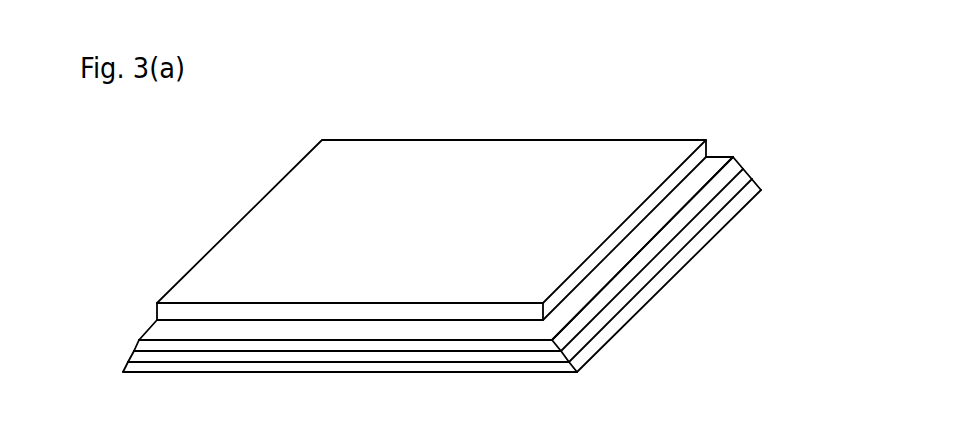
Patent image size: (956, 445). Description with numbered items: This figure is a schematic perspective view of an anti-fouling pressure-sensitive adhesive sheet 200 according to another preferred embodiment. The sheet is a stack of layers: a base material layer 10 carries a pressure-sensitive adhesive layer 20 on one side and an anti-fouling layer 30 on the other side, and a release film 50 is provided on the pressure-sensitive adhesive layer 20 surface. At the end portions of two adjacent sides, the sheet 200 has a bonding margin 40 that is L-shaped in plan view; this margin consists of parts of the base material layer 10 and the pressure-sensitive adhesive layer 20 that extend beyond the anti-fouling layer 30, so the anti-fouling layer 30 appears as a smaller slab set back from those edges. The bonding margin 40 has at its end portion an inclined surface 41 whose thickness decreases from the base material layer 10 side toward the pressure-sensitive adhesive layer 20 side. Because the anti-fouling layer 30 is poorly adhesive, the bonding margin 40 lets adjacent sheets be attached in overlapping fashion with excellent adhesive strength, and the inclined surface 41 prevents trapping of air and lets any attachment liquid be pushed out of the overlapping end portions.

The anti-fouling pressure-sensitive adhesive sheet 200 is at (514, 65).
The anti-fouling layer 30 is at (156, 312).
The base material layer 10 is at (137, 341).
The pressure-sensitive adhesive layer 20 is at (131, 356).
The release film 50 is at (125, 369).
The bonding margin 40 is at (718, 156).
The inclined surface 41 is at (592, 348).